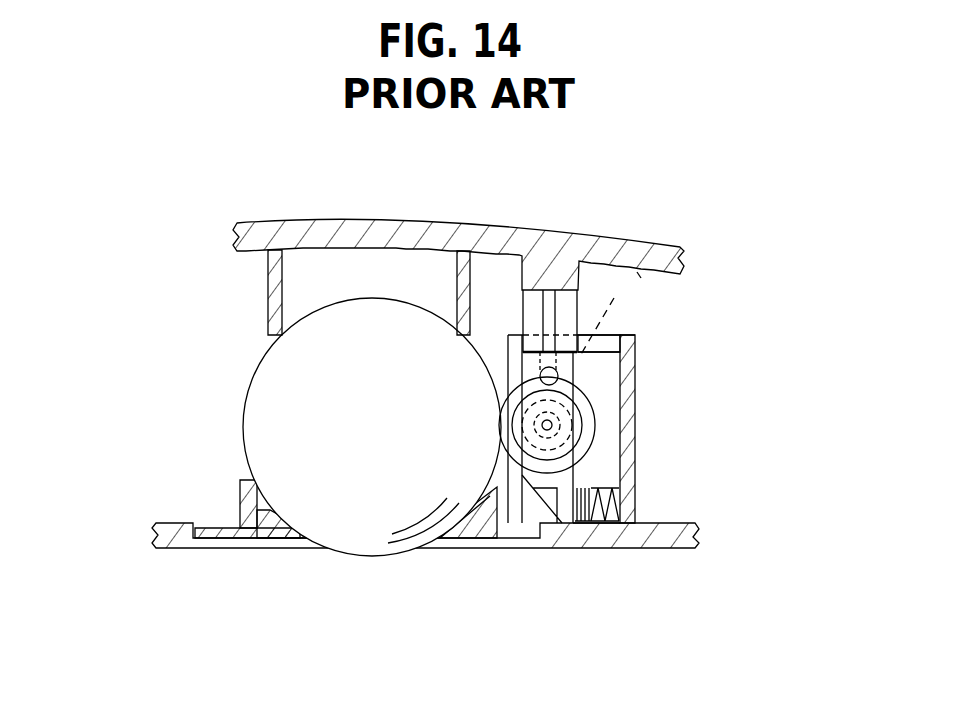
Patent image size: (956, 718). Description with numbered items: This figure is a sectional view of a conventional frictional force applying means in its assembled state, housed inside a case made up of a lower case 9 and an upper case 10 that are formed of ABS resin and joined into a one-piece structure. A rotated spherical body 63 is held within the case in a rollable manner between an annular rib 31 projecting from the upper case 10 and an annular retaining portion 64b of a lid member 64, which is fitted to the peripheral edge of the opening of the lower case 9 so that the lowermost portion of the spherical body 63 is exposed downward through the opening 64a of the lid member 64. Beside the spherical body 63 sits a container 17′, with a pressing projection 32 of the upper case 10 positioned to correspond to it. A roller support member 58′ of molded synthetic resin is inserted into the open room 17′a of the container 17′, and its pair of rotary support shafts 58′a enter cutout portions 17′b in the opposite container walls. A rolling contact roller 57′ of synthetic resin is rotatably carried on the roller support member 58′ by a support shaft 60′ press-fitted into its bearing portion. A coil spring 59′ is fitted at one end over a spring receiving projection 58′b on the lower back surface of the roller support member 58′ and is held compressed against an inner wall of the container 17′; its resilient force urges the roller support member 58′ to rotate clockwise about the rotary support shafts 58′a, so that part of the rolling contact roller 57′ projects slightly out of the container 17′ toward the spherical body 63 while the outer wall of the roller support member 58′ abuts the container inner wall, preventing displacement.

The lower case 9 is at (677, 535).
The upper case 10 is at (443, 222).
The annular rib 31 is at (268, 292).
The pressing projection 32 is at (578, 305).
The rolling contact roller 57′ is at (595, 437).
The roller support member 58′ is at (578, 413).
The rotary support shafts 58′a is at (558, 374).
The spring receiving projection 58′b is at (598, 477).
The coil spring 59′ is at (608, 523).
The support shaft 60′ is at (552, 426).
The spherical body 63 is at (249, 388).
The lid member 64 is at (275, 539).
The opening 64a is at (440, 546).
The annular retaining portion 64b is at (240, 488).
The container 17′ is at (636, 353).
The open room 17′a is at (607, 337).
The cutout portions 17′b is at (616, 314).